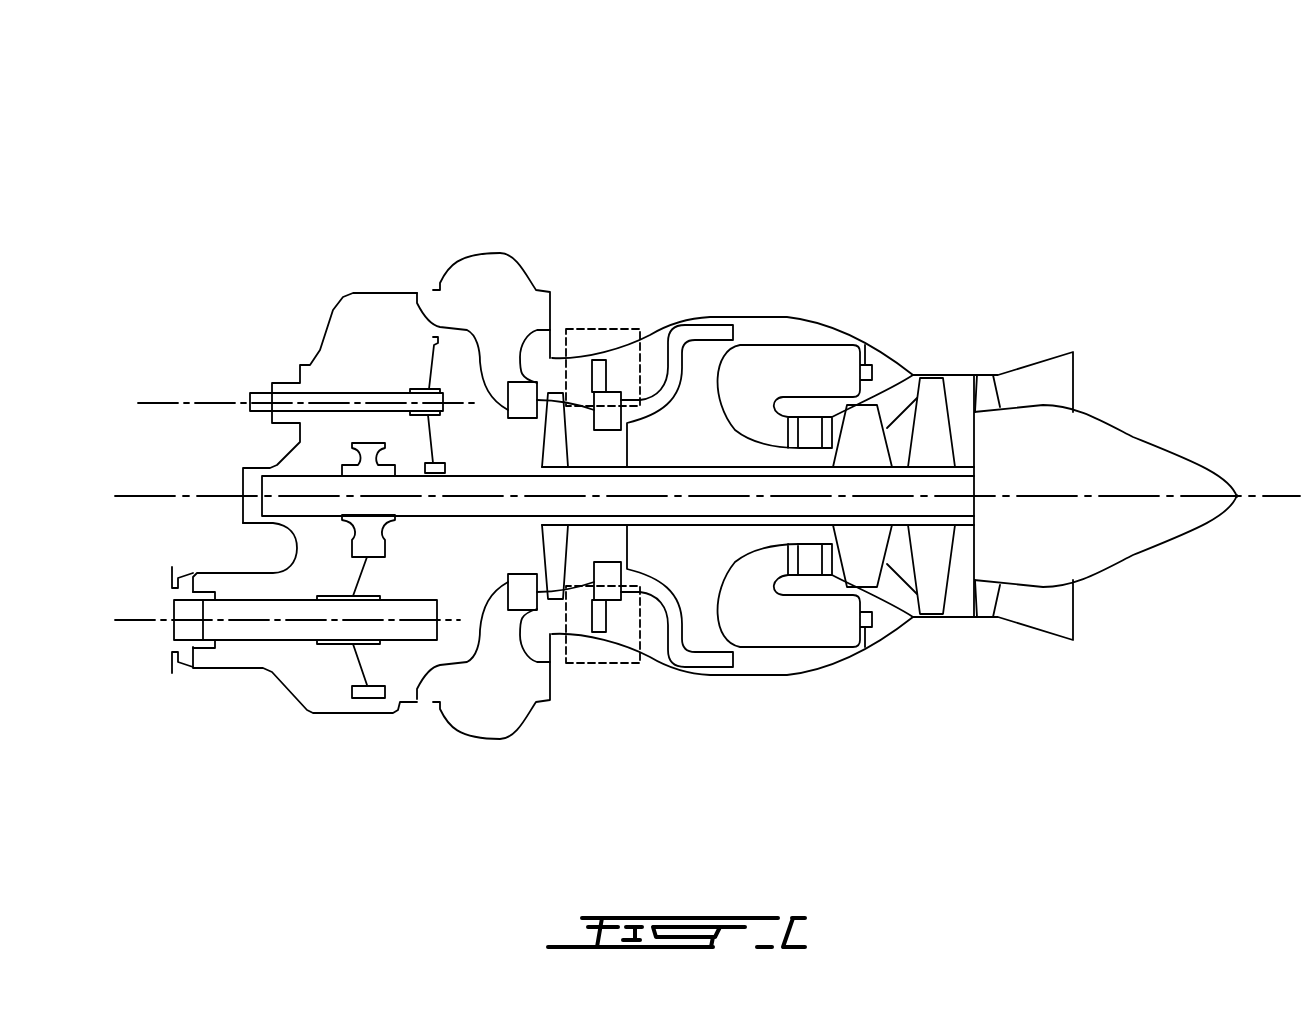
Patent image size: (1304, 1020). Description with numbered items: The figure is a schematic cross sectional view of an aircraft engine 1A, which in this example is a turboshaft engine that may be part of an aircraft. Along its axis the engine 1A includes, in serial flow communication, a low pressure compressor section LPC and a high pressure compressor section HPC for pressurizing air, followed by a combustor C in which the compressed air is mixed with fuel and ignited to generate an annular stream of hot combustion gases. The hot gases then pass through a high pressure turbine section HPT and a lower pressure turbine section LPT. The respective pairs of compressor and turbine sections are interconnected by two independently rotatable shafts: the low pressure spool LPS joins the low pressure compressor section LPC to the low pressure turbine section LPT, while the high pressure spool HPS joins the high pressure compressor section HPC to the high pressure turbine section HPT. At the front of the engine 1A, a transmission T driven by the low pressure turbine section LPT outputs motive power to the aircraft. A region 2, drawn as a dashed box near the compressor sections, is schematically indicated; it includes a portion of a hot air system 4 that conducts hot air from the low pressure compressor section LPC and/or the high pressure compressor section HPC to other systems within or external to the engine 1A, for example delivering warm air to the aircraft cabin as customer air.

The aircraft engine 1A is at (1052, 112).
The transmission T is at (250, 652).
The low pressure compressor section LPC is at (567, 322).
The region 2 is at (615, 329).
The hot air system 4 is at (606, 373).
The high pressure compressor section HPC is at (665, 312).
The combustor C is at (768, 665).
The high pressure turbine section HPT is at (877, 330).
The low pressure turbine section LPT is at (950, 355).
The high pressure spool HPS is at (590, 525).
The low pressure spool LPS is at (500, 516).